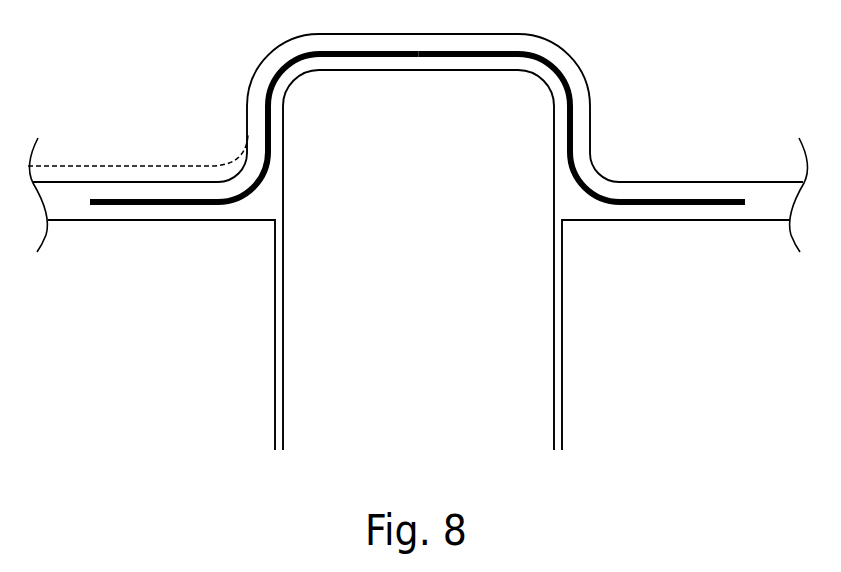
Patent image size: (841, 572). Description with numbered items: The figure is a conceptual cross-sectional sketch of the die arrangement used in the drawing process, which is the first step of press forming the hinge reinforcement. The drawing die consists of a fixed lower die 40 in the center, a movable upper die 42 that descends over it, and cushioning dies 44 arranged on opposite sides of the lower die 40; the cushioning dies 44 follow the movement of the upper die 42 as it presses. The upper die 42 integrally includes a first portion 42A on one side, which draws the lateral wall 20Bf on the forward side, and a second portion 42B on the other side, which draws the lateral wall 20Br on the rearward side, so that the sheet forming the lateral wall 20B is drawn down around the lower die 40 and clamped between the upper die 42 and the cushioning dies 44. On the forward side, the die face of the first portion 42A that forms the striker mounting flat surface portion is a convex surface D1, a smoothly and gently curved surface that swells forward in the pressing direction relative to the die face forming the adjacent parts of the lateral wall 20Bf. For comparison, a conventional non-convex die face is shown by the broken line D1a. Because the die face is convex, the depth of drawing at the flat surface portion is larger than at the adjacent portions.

The upper die 42 is at (418, 108).
The first portion 42A is at (155, 142).
The second portion 42B is at (706, 142).
The lateral wall 20B is at (417, 110).
The lateral wall on the forward side 20Bf is at (265, 158).
The lateral wall on the rearward side 20Br is at (573, 158).
The lower die 40 is at (433, 273).
The cushioning die 44 is at (160, 347).
The convex die face D1 is at (133, 112).
The conventional die face D1a is at (90, 167).